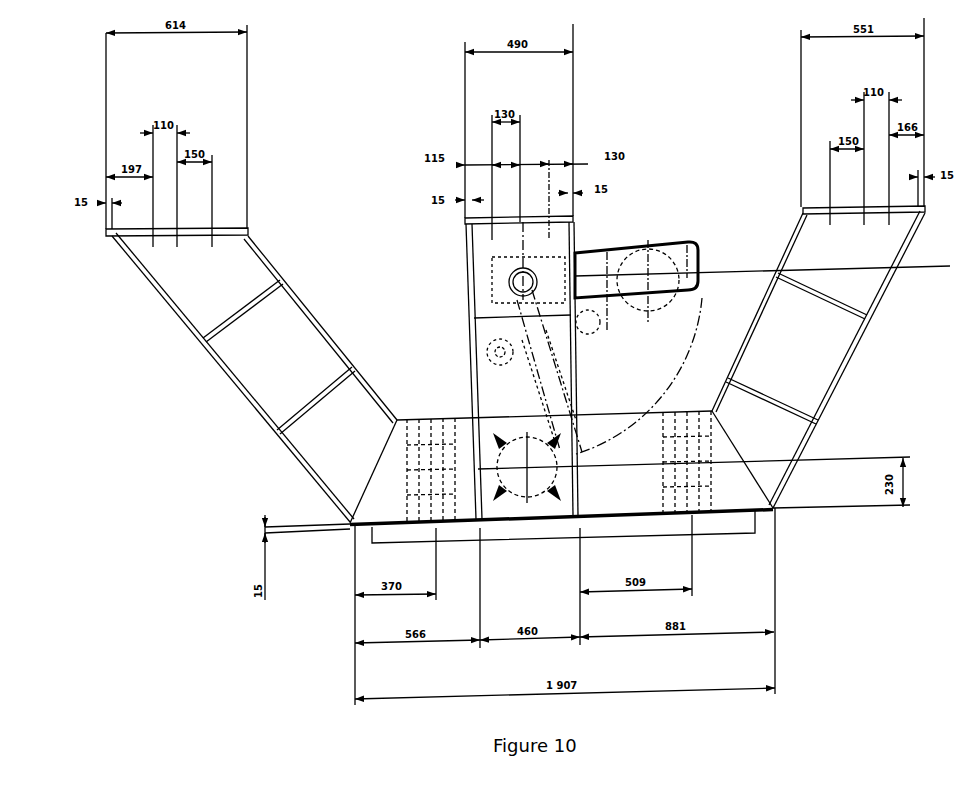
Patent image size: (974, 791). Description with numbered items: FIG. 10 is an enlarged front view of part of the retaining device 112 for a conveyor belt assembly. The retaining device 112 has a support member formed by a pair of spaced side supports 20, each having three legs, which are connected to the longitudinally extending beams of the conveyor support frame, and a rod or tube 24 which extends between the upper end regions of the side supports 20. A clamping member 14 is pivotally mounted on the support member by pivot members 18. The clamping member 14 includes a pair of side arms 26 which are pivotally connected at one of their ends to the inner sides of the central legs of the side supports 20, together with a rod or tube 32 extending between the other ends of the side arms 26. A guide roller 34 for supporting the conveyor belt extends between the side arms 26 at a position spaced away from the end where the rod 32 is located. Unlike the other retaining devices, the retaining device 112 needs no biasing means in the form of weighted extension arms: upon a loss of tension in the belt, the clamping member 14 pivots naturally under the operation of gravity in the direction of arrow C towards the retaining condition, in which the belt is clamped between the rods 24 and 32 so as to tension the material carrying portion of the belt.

The clamping member 14 is at (682, 226).
The pivot members 18 is at (536, 273).
The side supports 20 is at (880, 333).
The rod or tube 24 is at (505, 553).
The side arms 26 is at (563, 313).
The rod or tube 32 is at (688, 311).
The guide roller 34 is at (470, 351).
The retaining device 112 is at (236, 418).
The arrow C is at (722, 286).